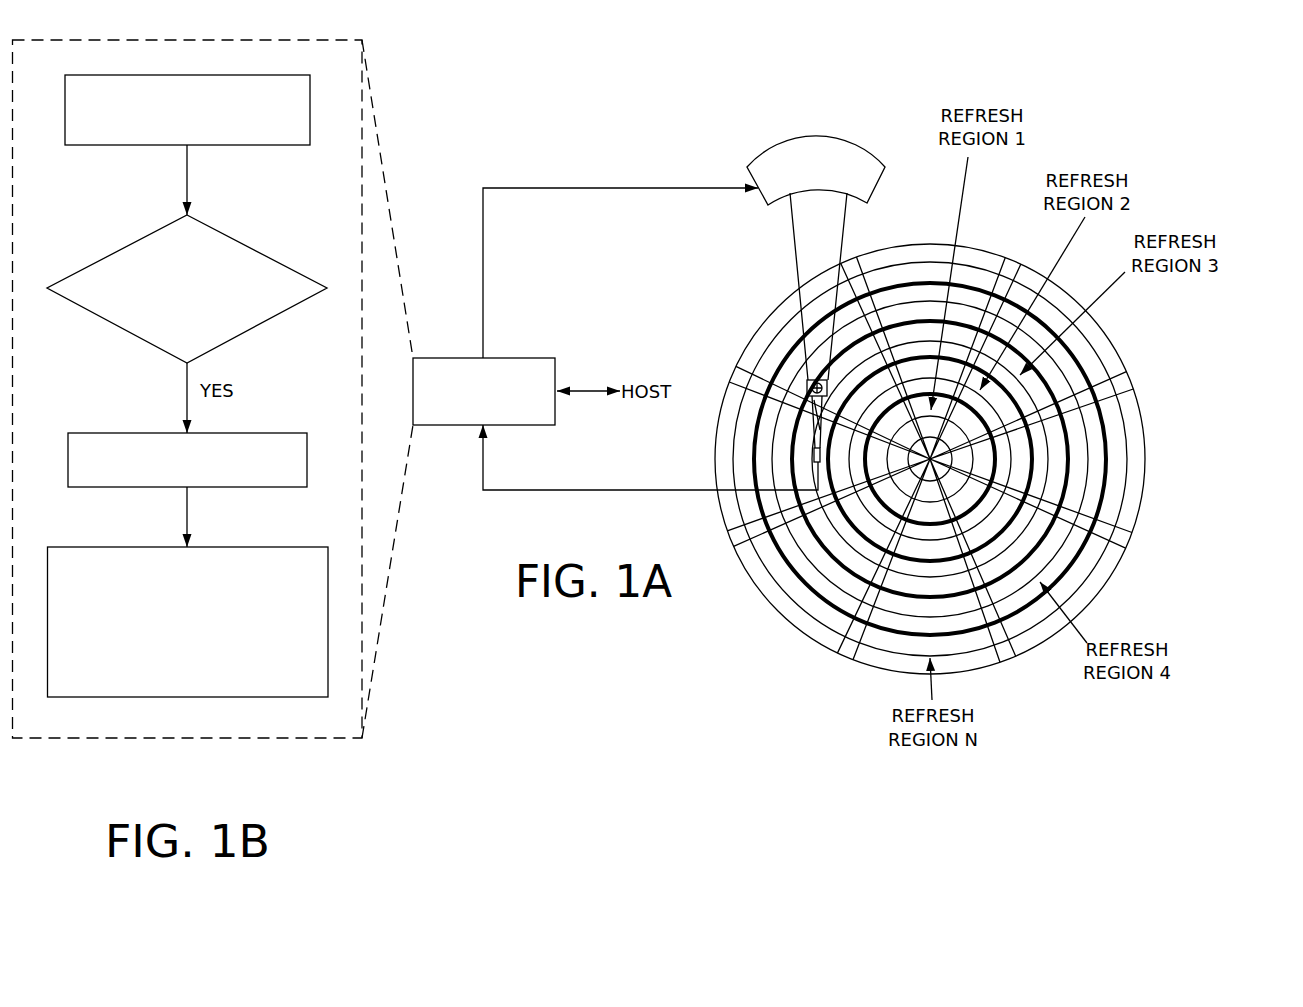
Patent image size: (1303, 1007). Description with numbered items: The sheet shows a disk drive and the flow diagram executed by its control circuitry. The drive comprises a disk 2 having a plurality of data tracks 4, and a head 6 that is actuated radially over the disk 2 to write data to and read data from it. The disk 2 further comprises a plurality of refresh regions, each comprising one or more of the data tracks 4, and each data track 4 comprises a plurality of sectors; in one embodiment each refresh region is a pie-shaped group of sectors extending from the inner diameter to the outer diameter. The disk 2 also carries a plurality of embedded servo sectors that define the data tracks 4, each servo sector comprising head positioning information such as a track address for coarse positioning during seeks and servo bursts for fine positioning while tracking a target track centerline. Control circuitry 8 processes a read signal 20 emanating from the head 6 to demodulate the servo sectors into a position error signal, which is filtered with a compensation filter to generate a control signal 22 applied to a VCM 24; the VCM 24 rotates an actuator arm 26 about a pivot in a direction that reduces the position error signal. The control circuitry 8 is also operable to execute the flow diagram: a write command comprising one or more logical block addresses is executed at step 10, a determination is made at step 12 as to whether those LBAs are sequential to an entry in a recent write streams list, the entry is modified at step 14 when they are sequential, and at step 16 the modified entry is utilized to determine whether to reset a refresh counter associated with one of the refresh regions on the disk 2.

In FIG. 1A, the disk 2 is at (771, 620).
In FIG. 1A, the data tracks 4 is at (918, 274).
In FIG. 1A, the head 6 is at (812, 459).
In FIG. 1A, the control circuitry 8 is at (526, 358).
In FIG. 1B, the execute write command step 10 is at (270, 146).
In FIG. 1B, the sequential LBA determination step 12 is at (265, 321).
In FIG. 1B, the modify entry step 14 is at (273, 488).
In FIG. 1B, the refresh counter reset determination step 16 is at (288, 698).
In FIG. 1A, the read signal 20 is at (589, 490).
In FIG. 1A, the control signal 22 is at (483, 248).
In FIG. 1A, the VCM 24 is at (763, 197).
In FIG. 1A, the actuator arm 26 is at (798, 267).